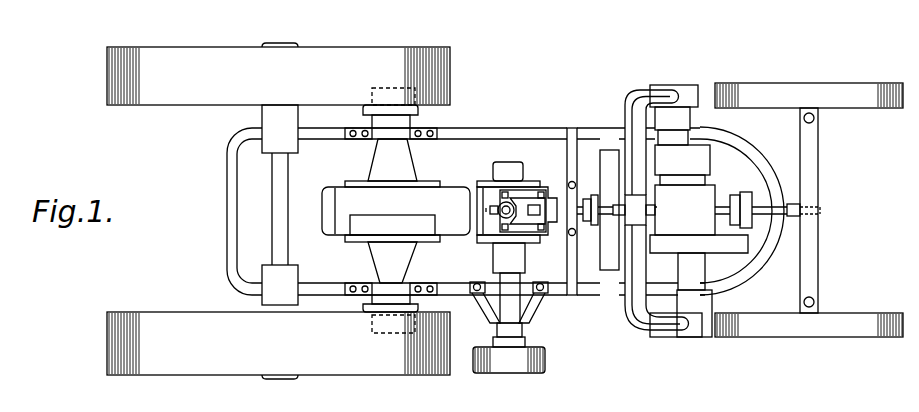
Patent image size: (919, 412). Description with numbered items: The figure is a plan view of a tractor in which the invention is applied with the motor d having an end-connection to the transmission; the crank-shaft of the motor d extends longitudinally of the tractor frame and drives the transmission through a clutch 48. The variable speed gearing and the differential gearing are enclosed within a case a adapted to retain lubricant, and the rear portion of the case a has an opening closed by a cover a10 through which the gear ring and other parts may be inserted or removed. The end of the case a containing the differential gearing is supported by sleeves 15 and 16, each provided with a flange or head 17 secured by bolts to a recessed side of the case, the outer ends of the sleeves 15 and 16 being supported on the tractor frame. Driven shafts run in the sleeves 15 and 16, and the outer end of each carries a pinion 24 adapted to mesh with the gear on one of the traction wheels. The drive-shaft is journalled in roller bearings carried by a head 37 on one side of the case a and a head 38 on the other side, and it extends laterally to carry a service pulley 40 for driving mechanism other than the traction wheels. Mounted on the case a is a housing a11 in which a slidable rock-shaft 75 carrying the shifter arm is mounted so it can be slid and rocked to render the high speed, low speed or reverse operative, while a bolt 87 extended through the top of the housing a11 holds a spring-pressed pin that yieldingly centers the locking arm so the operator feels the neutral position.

The pinion 24 is at (372, 92).
The flange or head 17 is at (352, 181).
The sleeve 16 is at (392, 160).
The sleeve 15 is at (392, 262).
The case a is at (503, 205).
The cover a10 is at (396, 211).
The housing a11 is at (531, 196).
The bolt 87 is at (519, 210).
The rock-shaft 75 is at (490, 212).
The head 38 is at (514, 169).
The head 37 is at (496, 258).
The service pulley 40 is at (509, 327).
The clutch 48 is at (612, 268).
The motor d is at (699, 211).